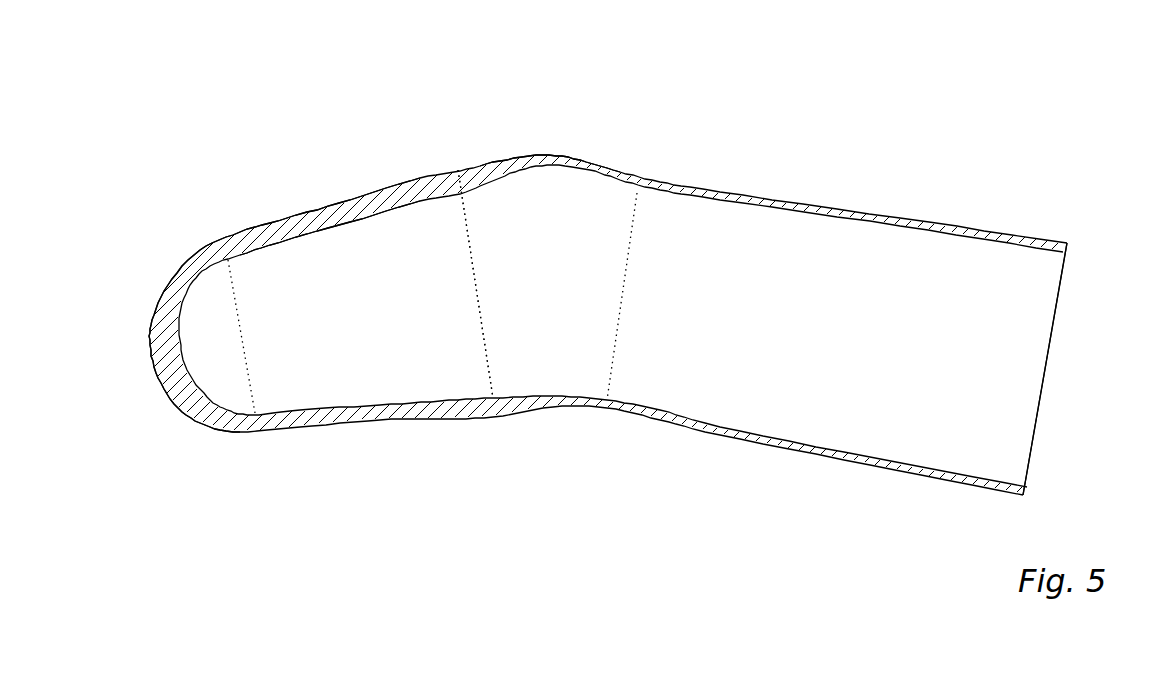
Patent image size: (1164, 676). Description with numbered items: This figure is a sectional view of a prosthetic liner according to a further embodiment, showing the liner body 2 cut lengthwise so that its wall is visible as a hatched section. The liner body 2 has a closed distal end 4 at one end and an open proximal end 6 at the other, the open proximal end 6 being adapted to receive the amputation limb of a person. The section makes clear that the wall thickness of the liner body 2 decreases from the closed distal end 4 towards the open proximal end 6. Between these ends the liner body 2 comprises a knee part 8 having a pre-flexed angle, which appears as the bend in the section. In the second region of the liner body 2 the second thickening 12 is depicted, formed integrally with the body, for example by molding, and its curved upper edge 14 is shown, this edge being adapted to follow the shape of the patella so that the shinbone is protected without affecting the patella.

The liner body 2 is at (752, 193).
The closed distal end 4 is at (157, 357).
The open proximal end 6 is at (1033, 367).
The knee part 8 is at (558, 180).
The second thickening 12 is at (322, 217).
The curved upper edge 14 is at (458, 168).